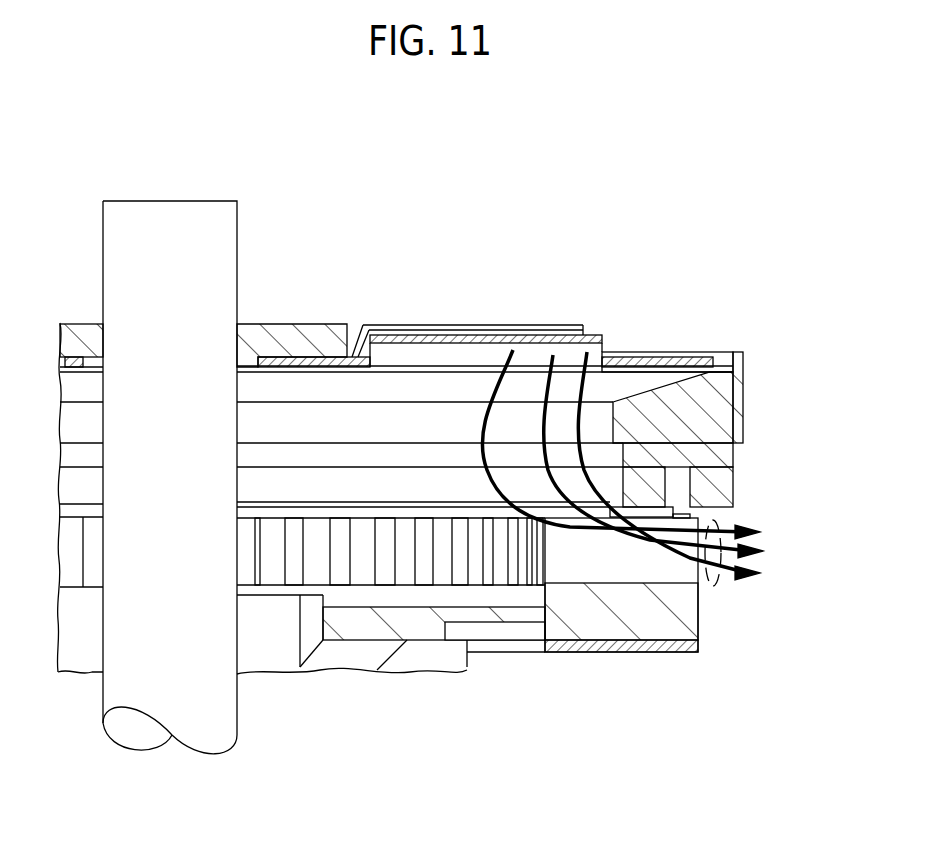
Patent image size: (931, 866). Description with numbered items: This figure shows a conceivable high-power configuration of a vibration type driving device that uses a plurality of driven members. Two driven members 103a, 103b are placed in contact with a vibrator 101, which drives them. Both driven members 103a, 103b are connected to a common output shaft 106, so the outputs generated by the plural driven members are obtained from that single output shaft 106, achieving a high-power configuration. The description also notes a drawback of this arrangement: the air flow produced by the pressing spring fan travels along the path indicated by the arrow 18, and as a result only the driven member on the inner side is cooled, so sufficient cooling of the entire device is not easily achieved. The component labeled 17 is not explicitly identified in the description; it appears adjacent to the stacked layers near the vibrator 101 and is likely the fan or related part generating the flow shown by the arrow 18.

The output shaft 106 is at (229, 302).
The heater sheet 17 is at (558, 337).
The driven member 103b is at (649, 478).
The driven member 103a is at (712, 493).
The vibrator 101 is at (606, 623).
The arrow 18 is at (713, 588).